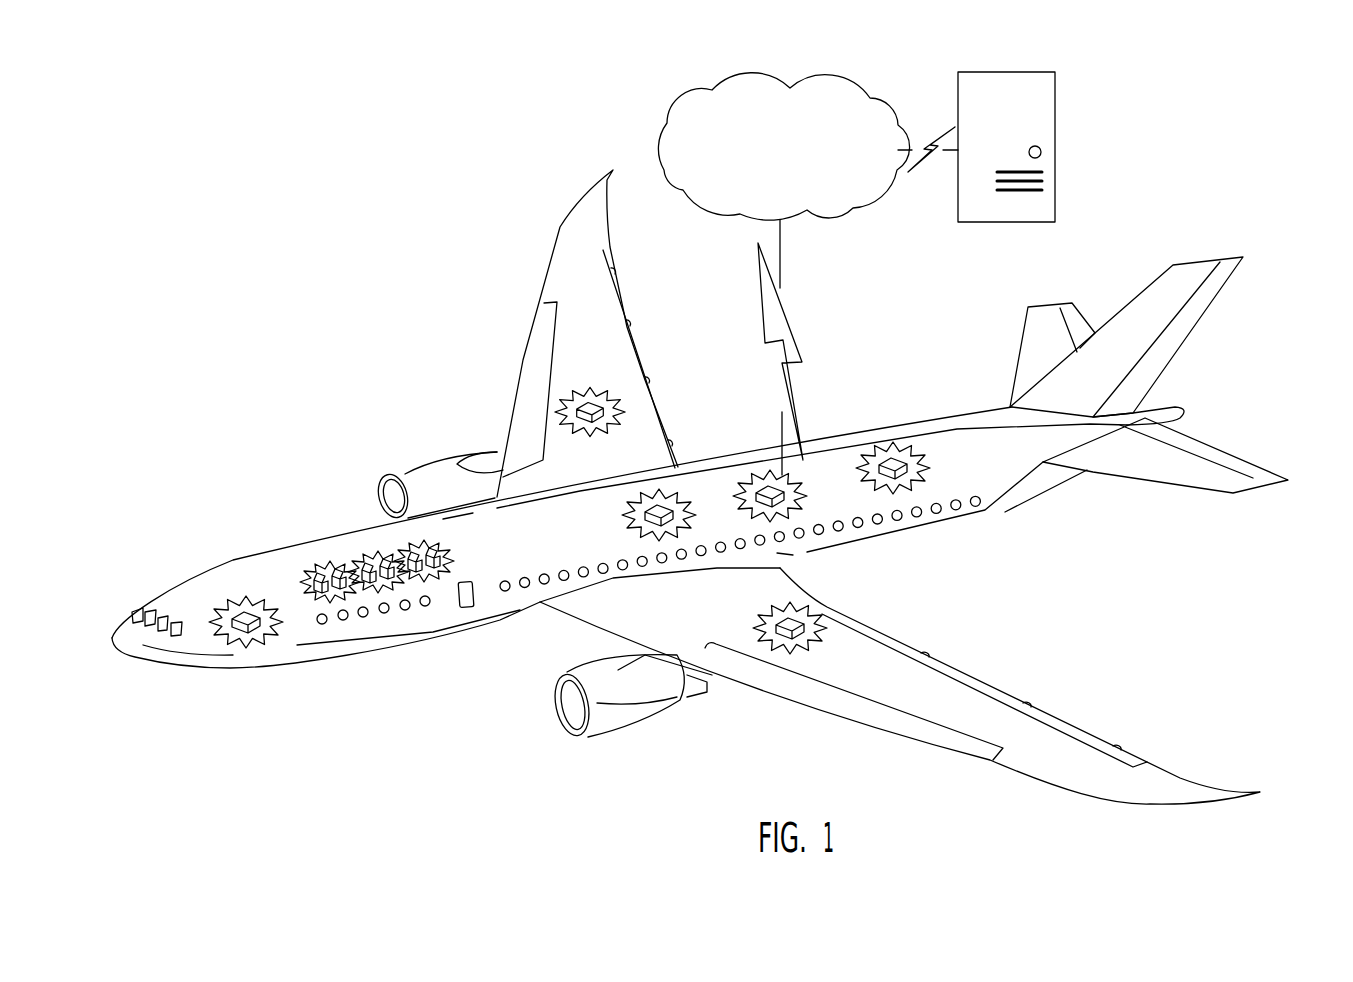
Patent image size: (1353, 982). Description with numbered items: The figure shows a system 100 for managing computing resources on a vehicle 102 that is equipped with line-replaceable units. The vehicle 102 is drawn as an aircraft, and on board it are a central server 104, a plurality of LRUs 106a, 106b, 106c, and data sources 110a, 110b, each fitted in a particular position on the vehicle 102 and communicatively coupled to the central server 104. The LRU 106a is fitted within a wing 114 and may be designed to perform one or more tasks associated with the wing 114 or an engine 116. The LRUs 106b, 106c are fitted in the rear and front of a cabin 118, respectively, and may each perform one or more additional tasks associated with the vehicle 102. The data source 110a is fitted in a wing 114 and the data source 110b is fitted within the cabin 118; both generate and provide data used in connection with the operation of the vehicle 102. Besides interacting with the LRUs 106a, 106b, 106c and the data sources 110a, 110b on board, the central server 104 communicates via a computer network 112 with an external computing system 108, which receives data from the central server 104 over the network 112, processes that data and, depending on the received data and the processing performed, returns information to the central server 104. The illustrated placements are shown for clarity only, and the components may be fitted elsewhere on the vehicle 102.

The system 100 is at (700, 438).
The vehicle 102 is at (700, 487).
The central server 104 is at (767, 480).
The LRU 106a is at (807, 607).
The LRU 106b is at (884, 447).
The LRU 106c is at (243, 610).
The external computing system 108 is at (1026, 117).
The data source 110a is at (593, 405).
The data source 110b is at (652, 498).
The computer network 112 is at (798, 176).
The wing 114 is at (546, 278).
The engine 116 is at (448, 468).
The cabin 118 is at (393, 642).